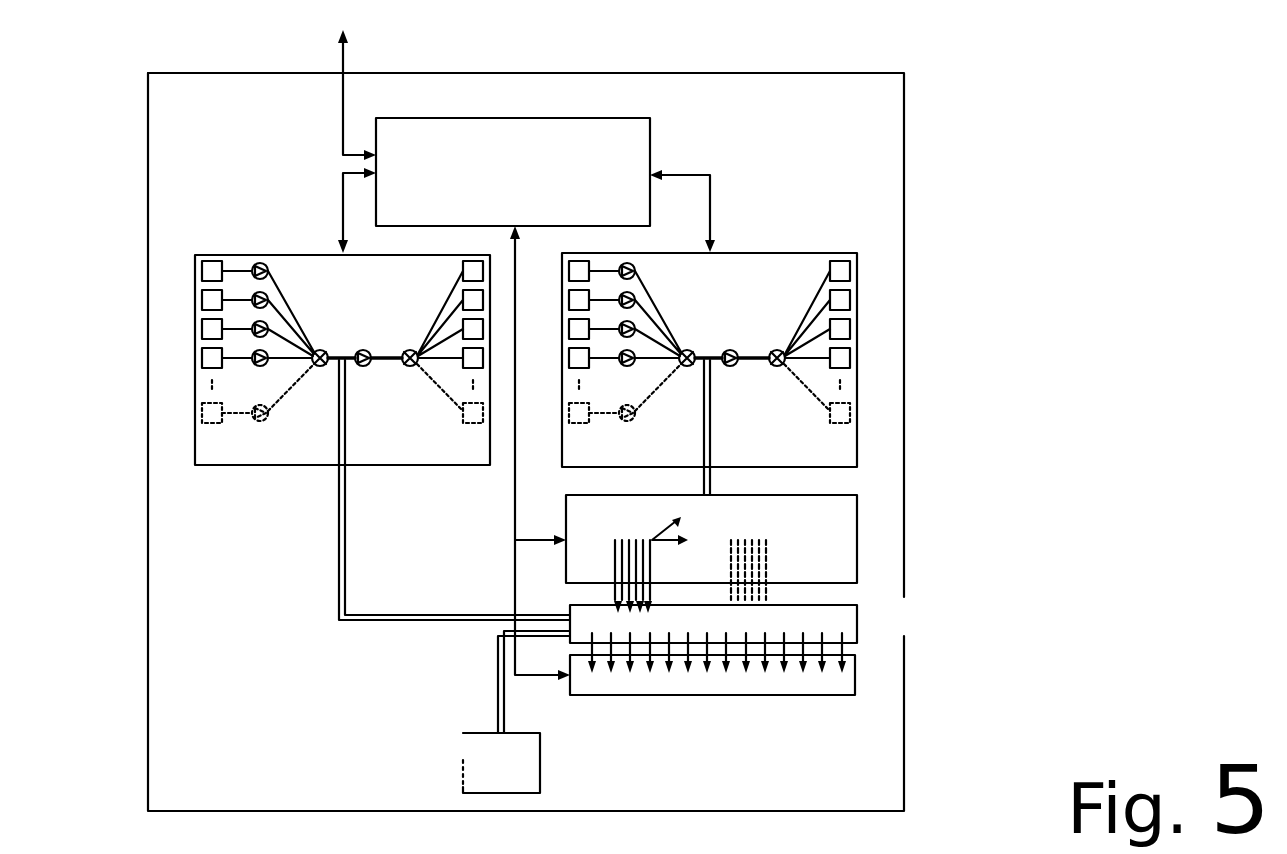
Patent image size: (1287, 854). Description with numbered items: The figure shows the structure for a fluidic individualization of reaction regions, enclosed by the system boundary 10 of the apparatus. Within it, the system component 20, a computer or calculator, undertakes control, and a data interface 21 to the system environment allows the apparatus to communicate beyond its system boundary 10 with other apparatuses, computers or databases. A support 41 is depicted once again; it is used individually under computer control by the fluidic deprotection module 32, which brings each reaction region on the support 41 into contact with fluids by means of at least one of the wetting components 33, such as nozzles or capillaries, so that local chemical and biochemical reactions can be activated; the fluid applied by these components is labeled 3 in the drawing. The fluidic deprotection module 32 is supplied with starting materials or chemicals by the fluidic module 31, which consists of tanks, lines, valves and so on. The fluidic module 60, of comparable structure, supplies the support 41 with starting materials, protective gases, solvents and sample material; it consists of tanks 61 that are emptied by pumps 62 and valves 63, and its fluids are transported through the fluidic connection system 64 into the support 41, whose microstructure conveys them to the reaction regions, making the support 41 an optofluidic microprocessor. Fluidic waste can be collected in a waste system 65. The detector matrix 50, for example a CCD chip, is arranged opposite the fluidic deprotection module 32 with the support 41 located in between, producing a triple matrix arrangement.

The system boundary 10 is at (877, 73).
The system component 20 is at (498, 118).
The data interface 21 is at (347, 58).
The fluidic module 31 is at (860, 296).
The fluidic deprotection module 32 is at (777, 543).
The wetting components 33 is at (655, 568).
The ink droplets 3 is at (772, 542).
The support 41 is at (860, 622).
The detector matrix 50 is at (848, 697).
The fluidic module 60 is at (278, 386).
The tanks 61 is at (194, 358).
The pumps 62 is at (257, 365).
The valves 63 is at (325, 351).
The fluidic connection system 64 is at (346, 552).
The waste system 65 is at (532, 768).